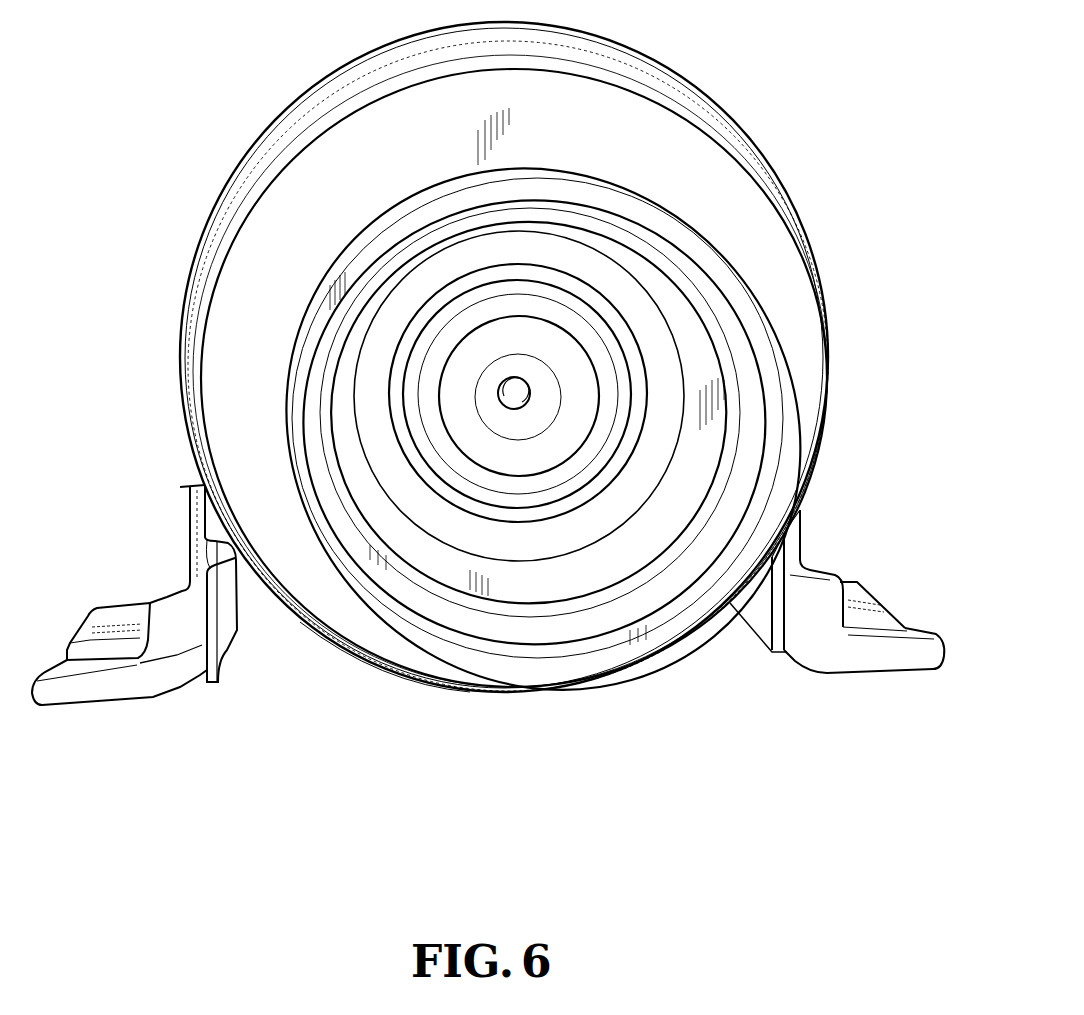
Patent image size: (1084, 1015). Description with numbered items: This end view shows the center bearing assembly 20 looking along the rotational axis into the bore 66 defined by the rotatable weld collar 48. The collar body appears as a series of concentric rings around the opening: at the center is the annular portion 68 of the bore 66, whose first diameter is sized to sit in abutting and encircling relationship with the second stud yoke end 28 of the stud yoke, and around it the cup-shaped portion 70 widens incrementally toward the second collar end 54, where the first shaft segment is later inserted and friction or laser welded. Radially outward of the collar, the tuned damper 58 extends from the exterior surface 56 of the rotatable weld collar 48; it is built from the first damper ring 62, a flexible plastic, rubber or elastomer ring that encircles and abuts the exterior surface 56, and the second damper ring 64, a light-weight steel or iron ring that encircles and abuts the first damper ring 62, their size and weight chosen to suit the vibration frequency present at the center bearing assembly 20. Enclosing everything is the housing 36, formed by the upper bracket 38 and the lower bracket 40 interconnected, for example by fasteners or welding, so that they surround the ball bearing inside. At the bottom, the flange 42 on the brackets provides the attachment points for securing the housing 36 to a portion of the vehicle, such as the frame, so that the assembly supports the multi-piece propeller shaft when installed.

The center bearing assembly 20 is at (787, 777).
The second stud yoke end 28 is at (536, 437).
The housing 36 is at (722, 114).
The upper bracket 38 is at (663, 84).
The lower bracket 40 is at (236, 640).
The flange 42 is at (905, 668).
The rotatable weld collar 48 is at (780, 425).
The second collar end 54 is at (666, 632).
The exterior surface 56 is at (785, 362).
The tuned damper 58 is at (205, 490).
The first damper ring 62 is at (328, 270).
The second damper ring 64 is at (378, 638).
The bore 66 is at (622, 552).
The annular portion 68 is at (480, 446).
The cup-shaped portion 70 is at (700, 482).